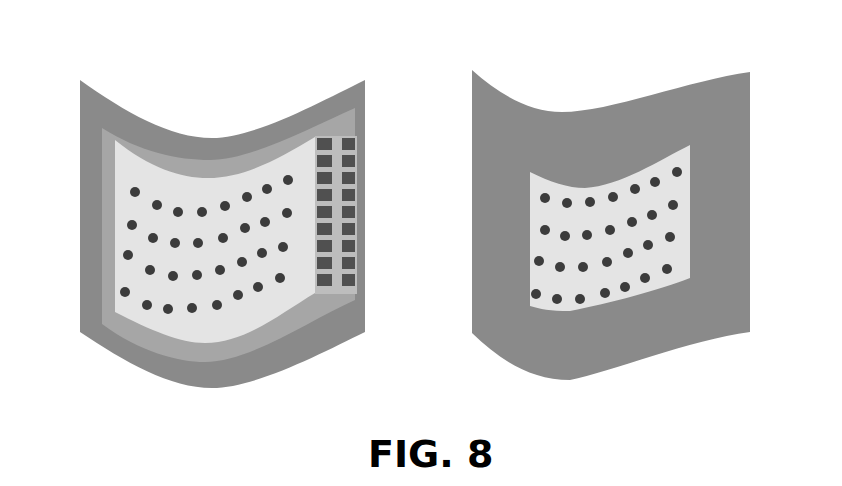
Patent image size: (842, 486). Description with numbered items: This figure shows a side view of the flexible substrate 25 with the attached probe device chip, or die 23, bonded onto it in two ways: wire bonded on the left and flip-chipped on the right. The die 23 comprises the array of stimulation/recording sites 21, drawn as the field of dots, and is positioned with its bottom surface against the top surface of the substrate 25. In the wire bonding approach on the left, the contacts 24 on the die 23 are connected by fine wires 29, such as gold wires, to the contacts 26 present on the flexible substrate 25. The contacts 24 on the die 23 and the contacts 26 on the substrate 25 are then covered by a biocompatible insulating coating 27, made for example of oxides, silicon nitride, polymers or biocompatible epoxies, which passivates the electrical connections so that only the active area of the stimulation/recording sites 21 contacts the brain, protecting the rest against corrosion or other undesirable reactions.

The stimulation/recording sites 21 is at (127, 254).
The die 23 is at (178, 160).
The contacts 24 is at (322, 142).
The substrate 25 is at (97, 112).
The contacts 26 is at (348, 140).
The biocompatible insulating coating 27 is at (153, 322).
The fine wires 29 is at (337, 280).